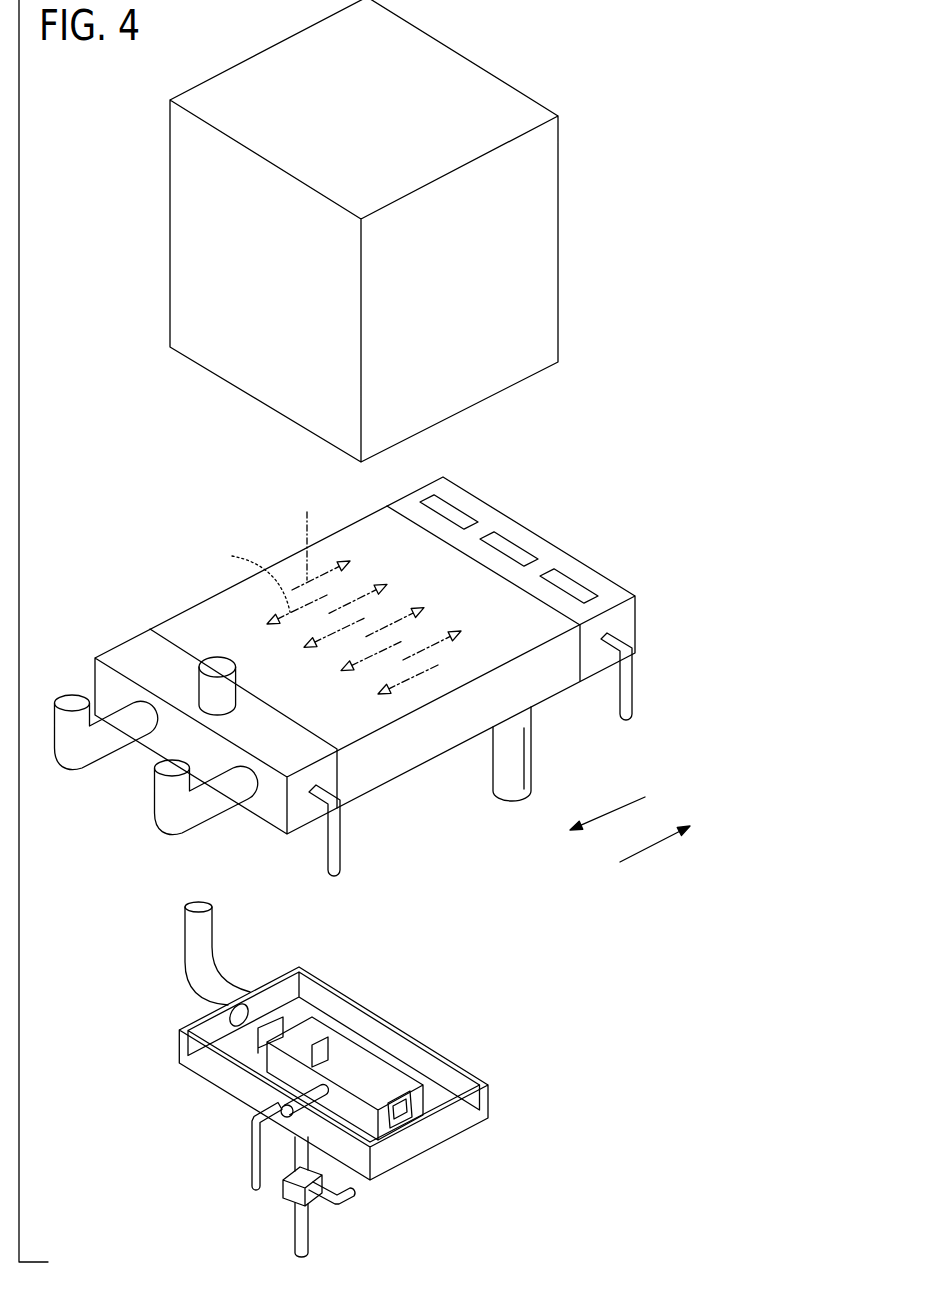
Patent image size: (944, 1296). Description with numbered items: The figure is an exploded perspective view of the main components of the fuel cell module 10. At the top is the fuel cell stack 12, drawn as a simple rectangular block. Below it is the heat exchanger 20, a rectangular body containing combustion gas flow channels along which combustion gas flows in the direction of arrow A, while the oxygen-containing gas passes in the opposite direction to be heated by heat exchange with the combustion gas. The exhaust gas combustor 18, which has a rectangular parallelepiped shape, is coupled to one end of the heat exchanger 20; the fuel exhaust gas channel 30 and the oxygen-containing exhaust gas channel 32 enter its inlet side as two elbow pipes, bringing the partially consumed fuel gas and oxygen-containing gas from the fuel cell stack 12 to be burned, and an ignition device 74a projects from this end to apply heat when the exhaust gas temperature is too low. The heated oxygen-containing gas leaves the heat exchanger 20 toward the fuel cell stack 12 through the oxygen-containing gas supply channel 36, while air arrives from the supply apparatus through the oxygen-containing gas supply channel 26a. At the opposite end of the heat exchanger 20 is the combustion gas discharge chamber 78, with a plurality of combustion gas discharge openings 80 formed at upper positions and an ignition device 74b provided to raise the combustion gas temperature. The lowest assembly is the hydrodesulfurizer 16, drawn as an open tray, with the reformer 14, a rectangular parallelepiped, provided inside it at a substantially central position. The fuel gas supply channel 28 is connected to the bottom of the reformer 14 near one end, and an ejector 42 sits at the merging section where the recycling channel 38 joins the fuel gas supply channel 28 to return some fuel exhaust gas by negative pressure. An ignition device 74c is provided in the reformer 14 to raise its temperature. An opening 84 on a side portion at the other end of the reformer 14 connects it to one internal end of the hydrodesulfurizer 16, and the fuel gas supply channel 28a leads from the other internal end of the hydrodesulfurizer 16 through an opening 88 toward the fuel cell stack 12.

The fuel cell module 10 is at (101, 131).
The fuel cell stack 12 is at (565, 196).
The reformer 14 is at (363, 1054).
The hydrodesulfurizer 16 is at (458, 1059).
The exhaust gas combustor 18 is at (277, 846).
The heat exchanger 20 is at (420, 768).
The oxygen-containing gas supply channel 26a is at (513, 797).
The fuel gas supply channel 28 is at (300, 1153).
The fuel gas supply channel 28a is at (185, 941).
The fuel exhaust gas channel 30 is at (73, 758).
The oxygen-containing exhaust gas channel 32 is at (205, 808).
The oxygen-containing gas supply channel 36 is at (231, 706).
The recycling channel 38 is at (337, 1203).
The ejector 42 is at (288, 1191).
The ignition device 74a is at (340, 858).
The ignition device 74b is at (633, 706).
The ignition device 74c is at (252, 1178).
The combustion gas discharge chamber 78 is at (610, 589).
The combustion gas discharge openings 80 is at (464, 518).
The opening 84 is at (399, 1122).
The opening 88 is at (272, 1023).